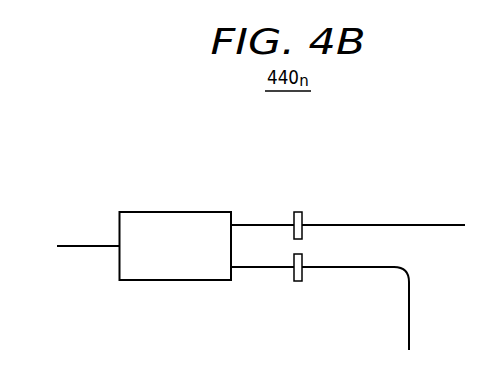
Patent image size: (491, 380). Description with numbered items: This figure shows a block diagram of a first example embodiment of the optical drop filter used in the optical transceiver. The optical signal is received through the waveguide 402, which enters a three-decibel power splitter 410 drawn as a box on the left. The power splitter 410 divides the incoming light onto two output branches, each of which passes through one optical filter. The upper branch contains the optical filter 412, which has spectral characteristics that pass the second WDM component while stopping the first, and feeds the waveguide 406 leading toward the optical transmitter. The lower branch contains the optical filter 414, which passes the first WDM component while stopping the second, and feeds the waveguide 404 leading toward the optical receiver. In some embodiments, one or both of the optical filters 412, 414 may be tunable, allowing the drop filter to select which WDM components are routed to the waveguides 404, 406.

The 3-dB power splitter 410 is at (181, 211).
The optical waveguide 402 is at (85, 246).
The optical waveguide 406 is at (400, 223).
The optical waveguide 404 is at (410, 320).
The optical filter 412 is at (298, 211).
The optical filter 414 is at (297, 282).